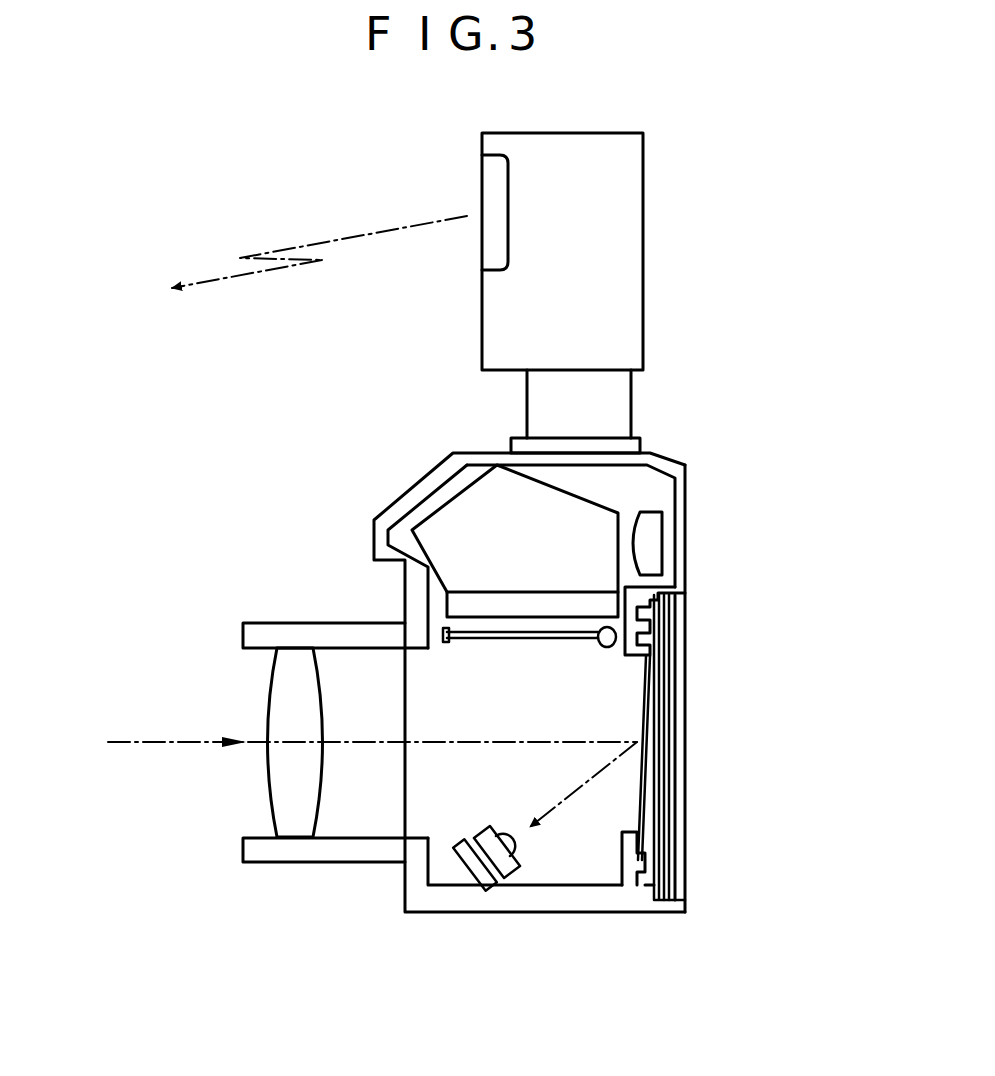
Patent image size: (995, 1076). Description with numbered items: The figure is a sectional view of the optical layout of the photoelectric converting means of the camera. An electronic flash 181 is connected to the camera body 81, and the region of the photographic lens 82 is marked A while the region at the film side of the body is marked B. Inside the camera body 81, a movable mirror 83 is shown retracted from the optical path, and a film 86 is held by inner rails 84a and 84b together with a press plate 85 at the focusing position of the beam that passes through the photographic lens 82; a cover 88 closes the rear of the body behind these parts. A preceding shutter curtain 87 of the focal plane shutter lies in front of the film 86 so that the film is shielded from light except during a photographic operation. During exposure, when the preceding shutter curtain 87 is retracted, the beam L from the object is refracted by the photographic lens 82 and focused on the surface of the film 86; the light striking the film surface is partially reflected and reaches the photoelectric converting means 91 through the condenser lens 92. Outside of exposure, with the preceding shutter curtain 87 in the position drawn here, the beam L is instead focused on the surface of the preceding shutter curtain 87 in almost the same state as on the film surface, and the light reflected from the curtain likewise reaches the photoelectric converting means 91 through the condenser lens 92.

The electronic flash 181 is at (483, 248).
The camera body 81 is at (410, 487).
The photographic lens 82 is at (272, 695).
The movable mirror 83 is at (442, 632).
The inner rail 84a is at (645, 632).
The inner rail 84b is at (645, 862).
The press plate 85 is at (662, 730).
The film 86 is at (655, 768).
The preceding shutter curtain 87 is at (640, 780).
The cover 88 is at (677, 683).
The photoelectric converting means 91 is at (470, 868).
The condenser lens 92 is at (503, 874).
The lens unit A is at (296, 584).
The image pickup unit B is at (728, 572).
The beam L is at (140, 745).